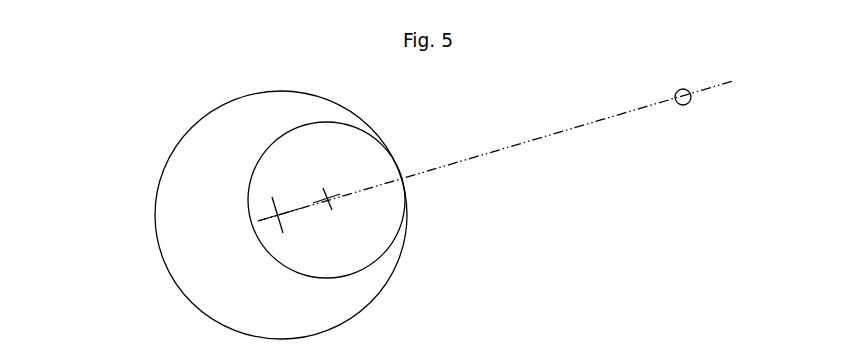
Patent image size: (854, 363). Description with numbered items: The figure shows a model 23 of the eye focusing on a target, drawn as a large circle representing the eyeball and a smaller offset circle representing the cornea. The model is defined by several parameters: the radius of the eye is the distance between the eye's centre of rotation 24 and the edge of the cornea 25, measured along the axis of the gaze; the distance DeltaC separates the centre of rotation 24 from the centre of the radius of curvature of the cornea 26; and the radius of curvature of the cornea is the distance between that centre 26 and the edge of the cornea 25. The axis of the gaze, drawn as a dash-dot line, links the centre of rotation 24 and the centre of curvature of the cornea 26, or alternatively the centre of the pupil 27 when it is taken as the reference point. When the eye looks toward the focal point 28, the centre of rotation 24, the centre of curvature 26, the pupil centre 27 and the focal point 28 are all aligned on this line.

The model of the eye 23 is at (168, 213).
The eye's centre of rotation 24 is at (302, 220).
The edge of the cornea 25 is at (428, 173).
The centre of the radius of curvature of the cornea 26 is at (352, 198).
The centre of the pupil 27 is at (418, 183).
The focal point 28 is at (707, 107).